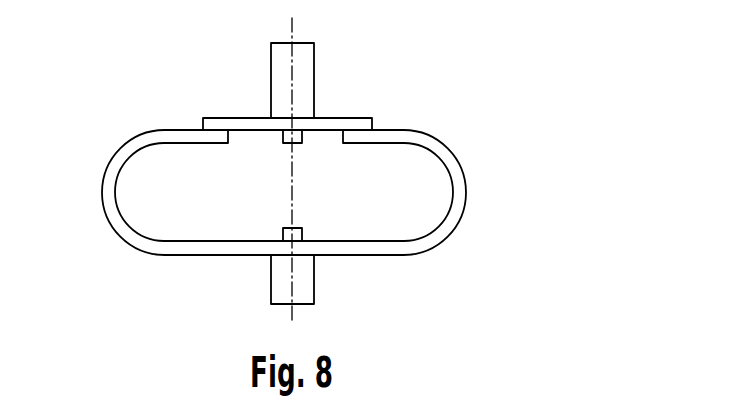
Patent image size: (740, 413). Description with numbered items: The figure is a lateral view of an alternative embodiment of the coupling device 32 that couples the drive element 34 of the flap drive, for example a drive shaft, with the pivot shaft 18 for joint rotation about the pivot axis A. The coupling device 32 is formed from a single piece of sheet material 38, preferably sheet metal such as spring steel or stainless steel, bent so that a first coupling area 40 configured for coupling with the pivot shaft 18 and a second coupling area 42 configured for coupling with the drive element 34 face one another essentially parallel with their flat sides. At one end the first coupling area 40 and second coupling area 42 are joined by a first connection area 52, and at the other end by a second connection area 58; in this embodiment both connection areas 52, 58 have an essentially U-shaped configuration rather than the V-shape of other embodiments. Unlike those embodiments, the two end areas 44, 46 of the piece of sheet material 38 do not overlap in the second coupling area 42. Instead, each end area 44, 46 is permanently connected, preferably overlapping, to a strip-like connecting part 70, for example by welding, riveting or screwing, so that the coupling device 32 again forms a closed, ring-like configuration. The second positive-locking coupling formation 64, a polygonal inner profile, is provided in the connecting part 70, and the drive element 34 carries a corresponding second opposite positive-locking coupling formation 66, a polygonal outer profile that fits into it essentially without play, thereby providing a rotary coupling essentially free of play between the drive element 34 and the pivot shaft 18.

The coupling device 32 is at (321, 176).
The second coupling area 42 is at (253, 81).
The first coupling area 40 is at (212, 294).
The drive element 34 is at (315, 80).
The pivot shaft 18 is at (271, 292).
The connecting part 70 is at (362, 118).
The first end area of the piece of sheet material 44 is at (218, 138).
The second end area of the piece of sheet material 46 is at (370, 141).
The second positive-locking coupling formation 64 is at (268, 143).
The second opposite positive-locking coupling formation 66 is at (302, 143).
The first connection area 52 is at (103, 185).
The second connection area 58 is at (467, 192).
The piece of sheet material 38 is at (458, 225).
The pivot axis A is at (293, 282).